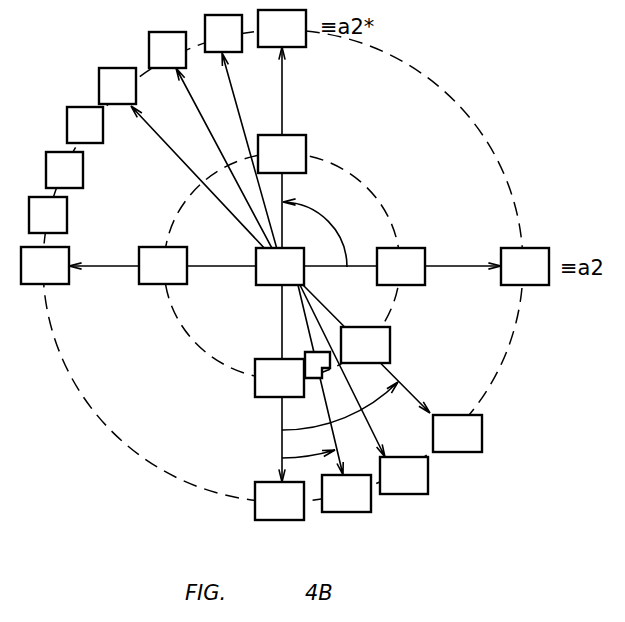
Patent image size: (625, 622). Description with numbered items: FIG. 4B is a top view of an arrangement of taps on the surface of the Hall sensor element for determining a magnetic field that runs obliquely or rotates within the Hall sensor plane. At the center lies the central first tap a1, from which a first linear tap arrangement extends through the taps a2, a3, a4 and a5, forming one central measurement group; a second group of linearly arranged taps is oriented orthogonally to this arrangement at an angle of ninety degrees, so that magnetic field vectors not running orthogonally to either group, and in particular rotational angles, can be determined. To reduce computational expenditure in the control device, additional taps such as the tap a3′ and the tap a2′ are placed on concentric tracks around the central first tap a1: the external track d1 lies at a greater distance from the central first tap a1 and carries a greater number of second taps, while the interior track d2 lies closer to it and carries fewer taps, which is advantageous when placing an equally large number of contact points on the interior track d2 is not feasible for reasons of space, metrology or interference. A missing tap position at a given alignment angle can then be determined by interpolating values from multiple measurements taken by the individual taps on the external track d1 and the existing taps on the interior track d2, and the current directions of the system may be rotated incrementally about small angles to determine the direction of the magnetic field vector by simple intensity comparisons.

The central first tap a1 is at (280, 266).
The tap of first linear tap arrangement a2 is at (45, 265).
The tap of first linear tap arrangement a3 is at (163, 265).
The tap of first linear tap arrangement a4 is at (401, 266).
The tap of first linear tap arrangement a5 is at (525, 266).
The additional second tap a2′ is at (457, 433).
The additional tap on interior track a3′ is at (365, 345).
The external concentric track d1 is at (506, 170).
The interior concentric track d2 is at (381, 204).